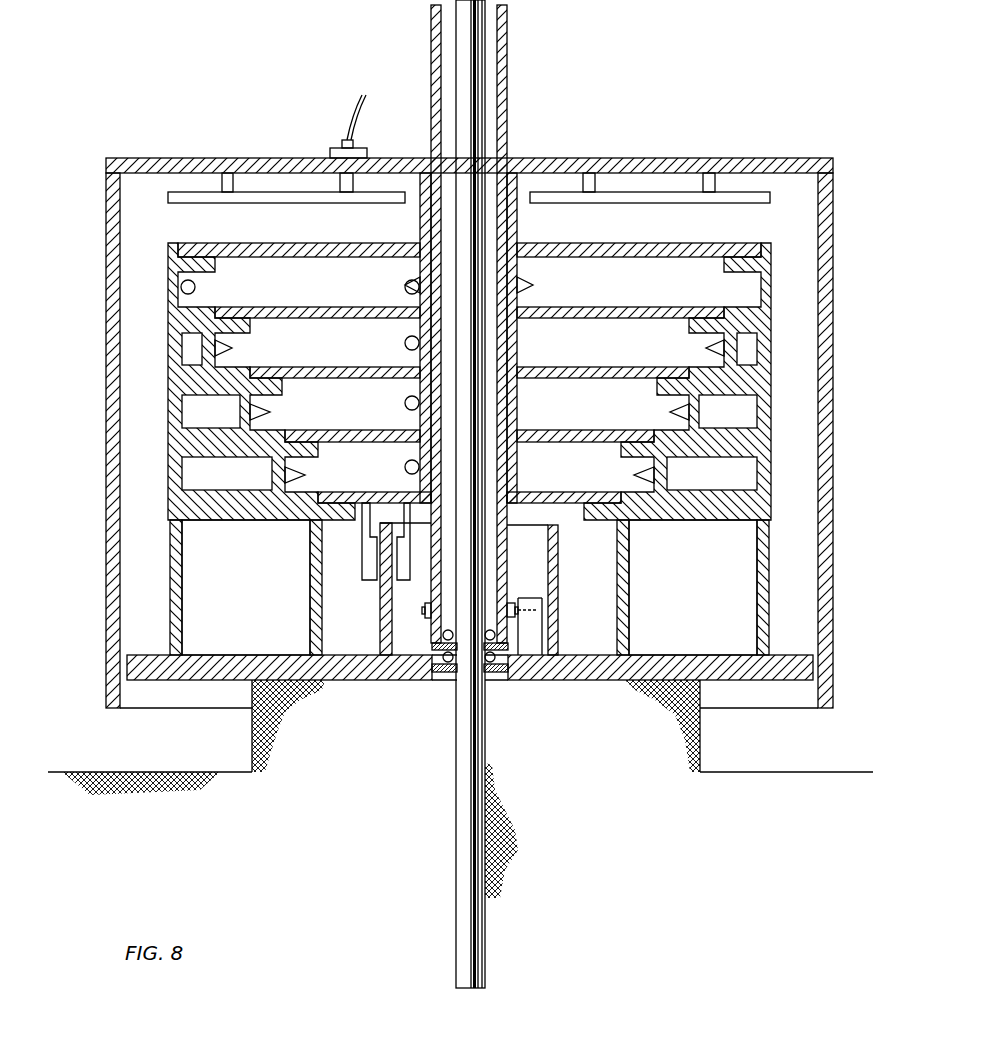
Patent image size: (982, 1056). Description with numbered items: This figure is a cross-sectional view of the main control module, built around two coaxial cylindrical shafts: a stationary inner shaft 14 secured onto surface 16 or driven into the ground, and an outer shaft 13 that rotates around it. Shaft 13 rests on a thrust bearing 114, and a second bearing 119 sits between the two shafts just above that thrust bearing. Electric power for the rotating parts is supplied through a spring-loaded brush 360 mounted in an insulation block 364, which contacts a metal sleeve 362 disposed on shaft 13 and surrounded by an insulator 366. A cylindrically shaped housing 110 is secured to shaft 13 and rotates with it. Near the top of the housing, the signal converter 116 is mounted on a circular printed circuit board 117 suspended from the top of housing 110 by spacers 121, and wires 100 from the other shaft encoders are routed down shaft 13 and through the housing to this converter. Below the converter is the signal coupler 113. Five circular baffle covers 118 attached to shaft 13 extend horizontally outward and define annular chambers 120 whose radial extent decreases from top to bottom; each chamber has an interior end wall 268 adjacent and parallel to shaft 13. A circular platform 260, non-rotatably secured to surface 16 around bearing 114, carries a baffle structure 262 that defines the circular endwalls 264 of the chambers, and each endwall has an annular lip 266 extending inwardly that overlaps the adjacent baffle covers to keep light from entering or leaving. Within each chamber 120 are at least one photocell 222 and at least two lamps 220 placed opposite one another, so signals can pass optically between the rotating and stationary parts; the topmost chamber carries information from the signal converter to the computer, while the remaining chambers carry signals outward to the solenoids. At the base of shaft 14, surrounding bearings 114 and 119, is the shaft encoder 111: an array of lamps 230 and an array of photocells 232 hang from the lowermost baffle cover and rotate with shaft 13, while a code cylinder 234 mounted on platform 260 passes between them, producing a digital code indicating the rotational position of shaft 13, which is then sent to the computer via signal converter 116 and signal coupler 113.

The outer shaft 13 is at (500, 53).
The inner shaft 14 is at (481, 30).
The surface 16 is at (577, 794).
The wires 100 is at (356, 94).
The housing 110 is at (313, 158).
The shaft encoder 111 is at (555, 723).
The signal coupler 113 is at (96, 367).
The thrust bearing 114 is at (433, 657).
The signal converter 116 is at (586, 131).
The printed circuit board 117 is at (698, 203).
The baffle covers 118 is at (372, 492).
The second bearing 119 is at (453, 680).
The annular chambers 120 is at (590, 362).
The spacers 121 is at (590, 177).
The lamps 220 is at (410, 284).
The photocell 222 is at (196, 287).
The lamps 230 is at (385, 602).
The photocells 232 is at (365, 560).
The code cylinder 234 is at (380, 632).
The platform 260 is at (613, 673).
The baffle structure 262 is at (775, 480).
The endwalls 264 is at (705, 412).
The annular lip 266 is at (703, 332).
The interior end wall 268 is at (512, 228).
The spring-loaded brush 360 is at (541, 630).
The metal sleeve 362 is at (427, 605).
The insulation block 364 is at (541, 616).
The insulator 366 is at (516, 600).